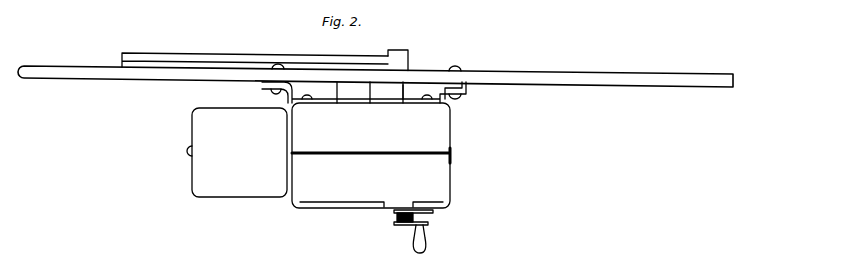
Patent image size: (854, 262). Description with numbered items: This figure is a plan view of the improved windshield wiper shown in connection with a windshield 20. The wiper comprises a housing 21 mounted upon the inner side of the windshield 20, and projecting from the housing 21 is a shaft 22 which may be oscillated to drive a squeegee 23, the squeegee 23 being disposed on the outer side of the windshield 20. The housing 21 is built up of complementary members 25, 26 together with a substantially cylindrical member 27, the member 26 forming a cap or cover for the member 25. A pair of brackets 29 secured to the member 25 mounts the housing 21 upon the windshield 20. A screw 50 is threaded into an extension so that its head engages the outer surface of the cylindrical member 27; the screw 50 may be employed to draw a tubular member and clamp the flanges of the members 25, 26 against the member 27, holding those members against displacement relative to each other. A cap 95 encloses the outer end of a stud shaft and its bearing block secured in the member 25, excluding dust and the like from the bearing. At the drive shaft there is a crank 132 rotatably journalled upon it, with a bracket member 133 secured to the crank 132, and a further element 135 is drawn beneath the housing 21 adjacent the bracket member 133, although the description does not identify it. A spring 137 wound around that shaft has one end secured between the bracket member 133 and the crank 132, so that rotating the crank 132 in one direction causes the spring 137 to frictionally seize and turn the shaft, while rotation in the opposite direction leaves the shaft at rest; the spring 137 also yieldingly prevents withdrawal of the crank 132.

The windshield 20 is at (566, 78).
The housing 21 is at (452, 124).
The shaft 22 is at (400, 90).
The squeegee 23 is at (193, 64).
The member 25 is at (438, 136).
The member 26 is at (438, 173).
The cylindrical member 27 is at (210, 170).
The brackets 29 is at (280, 87).
The screw 50 is at (190, 151).
The cap 95 is at (352, 90).
The crank 132 is at (412, 234).
The bracket member 133 is at (433, 213).
The lower contact plate 135 is at (396, 225).
The spring 137 is at (396, 216).